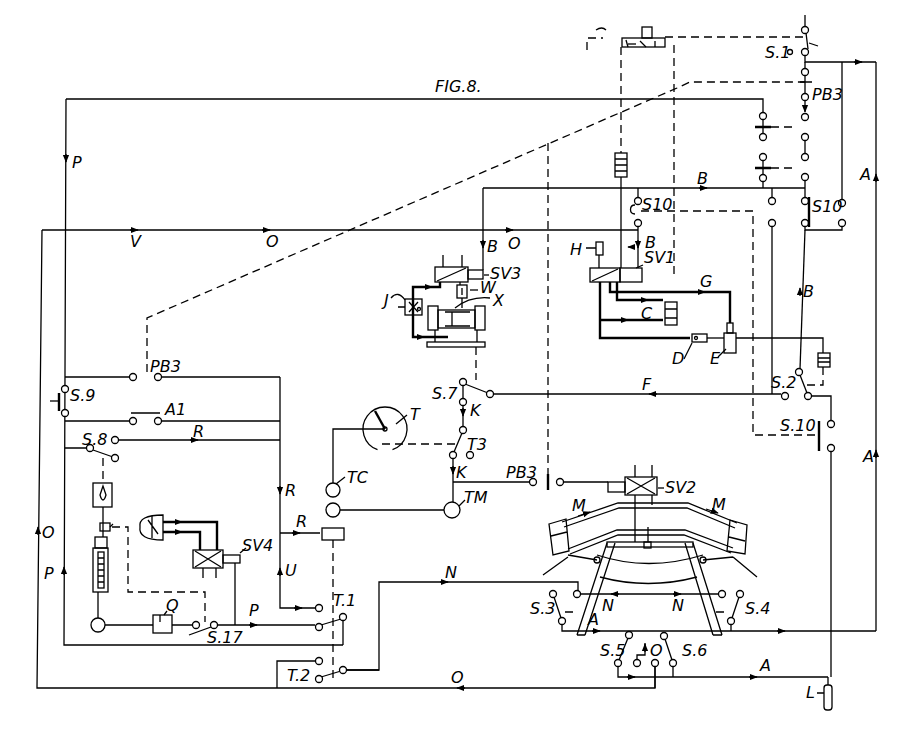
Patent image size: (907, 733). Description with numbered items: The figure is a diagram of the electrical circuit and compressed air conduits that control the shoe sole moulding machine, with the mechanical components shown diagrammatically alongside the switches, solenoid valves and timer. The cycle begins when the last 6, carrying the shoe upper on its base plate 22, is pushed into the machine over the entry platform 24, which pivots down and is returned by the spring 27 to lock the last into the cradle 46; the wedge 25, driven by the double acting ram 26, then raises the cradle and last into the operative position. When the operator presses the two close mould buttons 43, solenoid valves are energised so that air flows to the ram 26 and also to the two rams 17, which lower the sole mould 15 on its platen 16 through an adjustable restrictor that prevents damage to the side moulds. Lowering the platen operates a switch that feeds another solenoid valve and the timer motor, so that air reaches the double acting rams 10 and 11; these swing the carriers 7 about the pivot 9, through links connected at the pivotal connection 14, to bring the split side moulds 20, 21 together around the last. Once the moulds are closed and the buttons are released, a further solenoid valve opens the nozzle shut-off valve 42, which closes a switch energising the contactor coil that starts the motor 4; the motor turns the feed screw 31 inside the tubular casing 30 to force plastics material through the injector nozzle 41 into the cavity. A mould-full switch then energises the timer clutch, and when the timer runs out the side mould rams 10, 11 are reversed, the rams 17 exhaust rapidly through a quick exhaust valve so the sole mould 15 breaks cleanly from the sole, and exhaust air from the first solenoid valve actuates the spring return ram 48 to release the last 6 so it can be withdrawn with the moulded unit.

The motor 4 is at (91, 625).
The last 6 is at (640, 34).
The carriers 7 is at (649, 589).
The pivot 9 is at (648, 541).
The double acting ram 10 is at (552, 522).
The double acting ram 11 is at (748, 524).
The pivotal connection 14 is at (668, 566).
The sole mould 15 is at (442, 347).
The platen 16 is at (485, 345).
The rams 17 is at (428, 325).
The split side mould 20 is at (110, 483).
The split side mould 21 is at (95, 483).
The base plate 22 is at (656, 38).
The platform 24 is at (622, 46).
The wedge 25 is at (660, 47).
The double acting ram 26 is at (678, 312).
The spring 27 is at (630, 41).
The tubular casing 30 is at (93, 582).
The feed screw 31 is at (93, 565).
The injector nozzle 41 is at (100, 517).
The nozzle shut-off valve 42 is at (156, 519).
The close mould buttons 43 is at (765, 140).
The cradle 46 is at (642, 47).
The spring return ram 48 is at (615, 165).